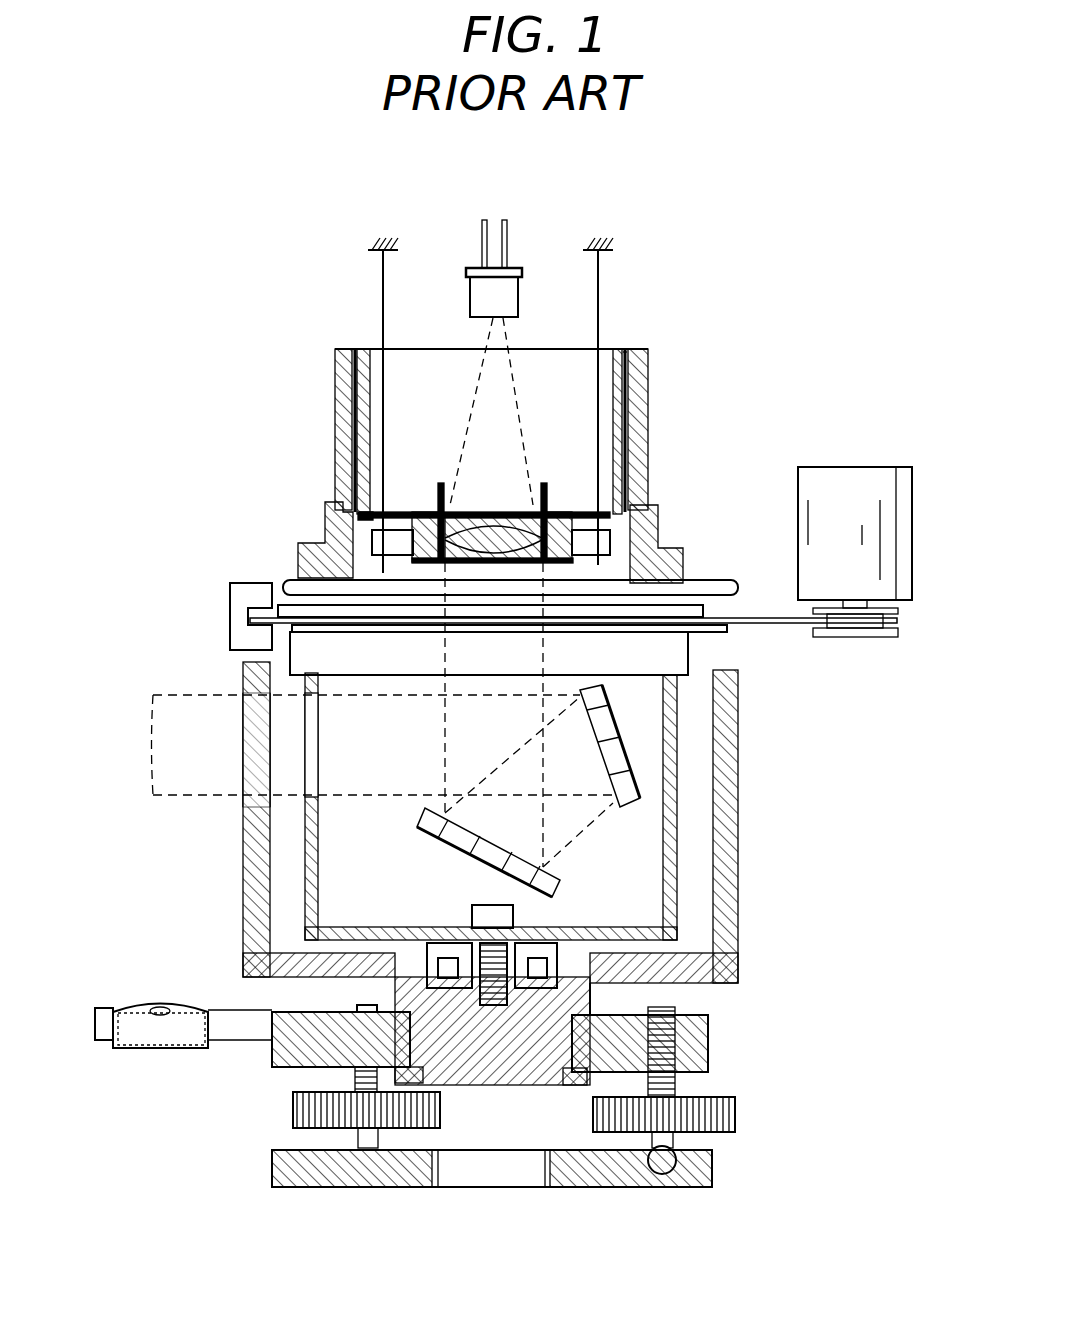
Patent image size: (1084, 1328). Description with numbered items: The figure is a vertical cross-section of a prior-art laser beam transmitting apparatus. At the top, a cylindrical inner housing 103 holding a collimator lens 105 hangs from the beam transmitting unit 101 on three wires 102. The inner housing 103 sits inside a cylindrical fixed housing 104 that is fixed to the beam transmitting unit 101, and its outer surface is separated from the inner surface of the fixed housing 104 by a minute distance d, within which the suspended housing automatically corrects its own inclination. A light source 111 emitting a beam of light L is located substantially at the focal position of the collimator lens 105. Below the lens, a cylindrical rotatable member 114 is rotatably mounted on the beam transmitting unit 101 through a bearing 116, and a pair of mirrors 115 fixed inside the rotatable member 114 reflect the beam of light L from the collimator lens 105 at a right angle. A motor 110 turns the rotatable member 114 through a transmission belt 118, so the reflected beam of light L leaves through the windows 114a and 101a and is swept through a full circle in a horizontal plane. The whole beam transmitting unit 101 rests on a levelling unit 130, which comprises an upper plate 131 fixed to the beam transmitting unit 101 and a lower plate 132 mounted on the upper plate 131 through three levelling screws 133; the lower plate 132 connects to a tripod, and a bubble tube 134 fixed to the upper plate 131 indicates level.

The beam transmitting unit 101 is at (600, 237).
The window 101a is at (267, 800).
The wires 102 is at (383, 268).
The inner housing 103 is at (370, 347).
The fixed housing 104 is at (647, 387).
The collimator lens 105 is at (495, 513).
The motor 110 is at (880, 490).
The light source 111 is at (483, 297).
The rotatable member 114 is at (670, 717).
The window 114a is at (312, 700).
The mirrors 115 is at (636, 770).
The bearing 116 is at (547, 978).
The transmission belt 118 is at (763, 617).
The levelling unit 130 is at (538, 1082).
The upper plate 131 is at (695, 1046).
The lower plate 132 is at (689, 1174).
The levelling screws 133 is at (293, 1112).
The bubble tube 134 is at (131, 1050).
The minute distance d is at (630, 337).
The beam of light L is at (185, 695).